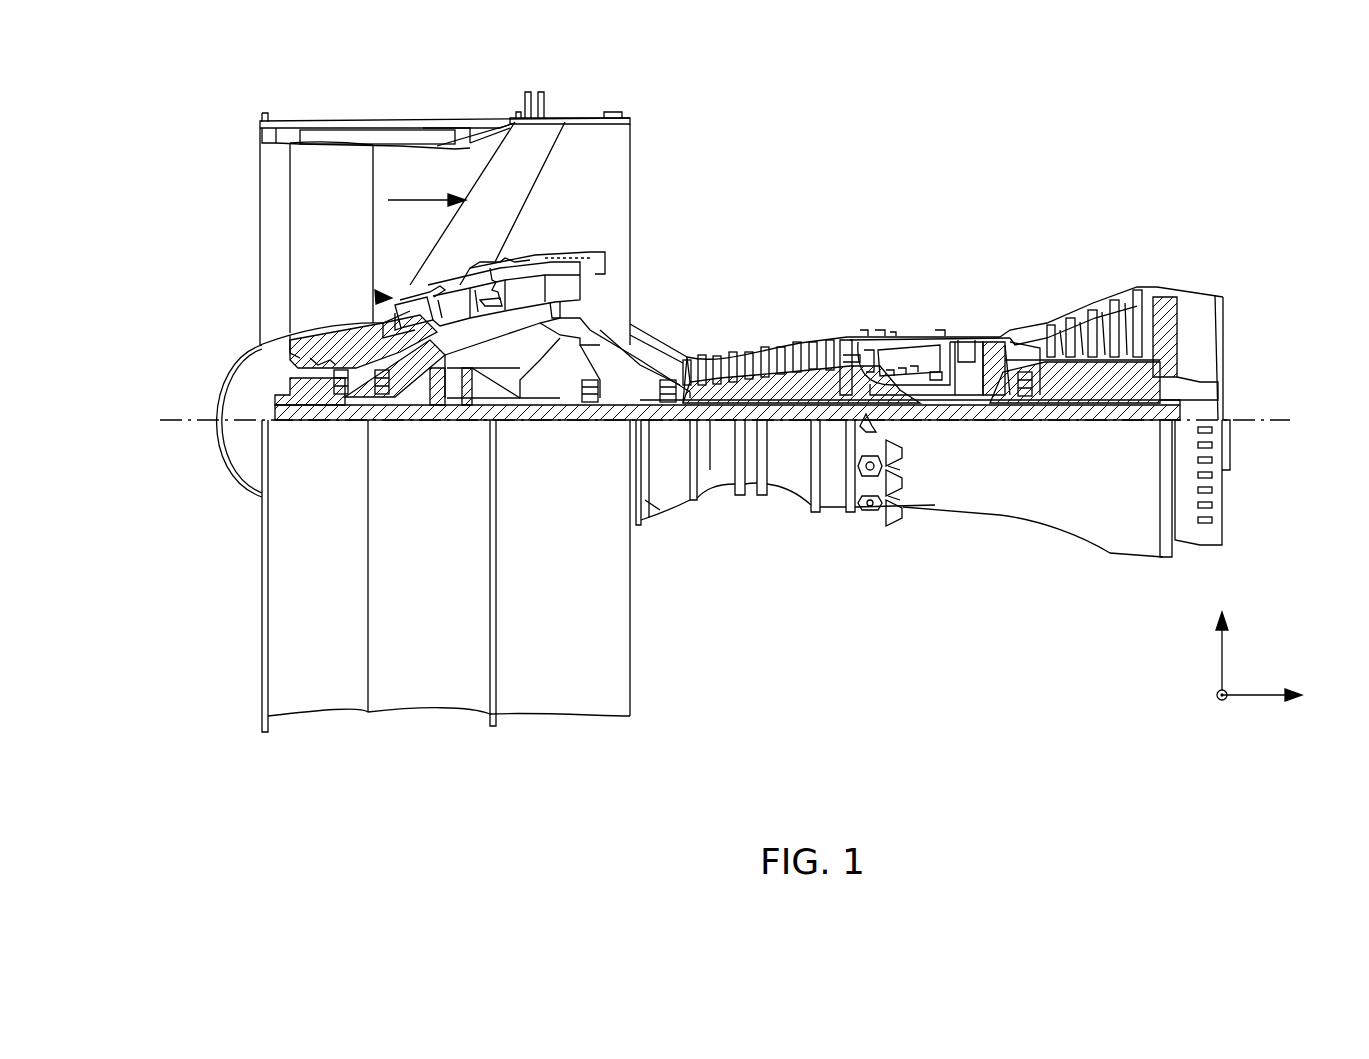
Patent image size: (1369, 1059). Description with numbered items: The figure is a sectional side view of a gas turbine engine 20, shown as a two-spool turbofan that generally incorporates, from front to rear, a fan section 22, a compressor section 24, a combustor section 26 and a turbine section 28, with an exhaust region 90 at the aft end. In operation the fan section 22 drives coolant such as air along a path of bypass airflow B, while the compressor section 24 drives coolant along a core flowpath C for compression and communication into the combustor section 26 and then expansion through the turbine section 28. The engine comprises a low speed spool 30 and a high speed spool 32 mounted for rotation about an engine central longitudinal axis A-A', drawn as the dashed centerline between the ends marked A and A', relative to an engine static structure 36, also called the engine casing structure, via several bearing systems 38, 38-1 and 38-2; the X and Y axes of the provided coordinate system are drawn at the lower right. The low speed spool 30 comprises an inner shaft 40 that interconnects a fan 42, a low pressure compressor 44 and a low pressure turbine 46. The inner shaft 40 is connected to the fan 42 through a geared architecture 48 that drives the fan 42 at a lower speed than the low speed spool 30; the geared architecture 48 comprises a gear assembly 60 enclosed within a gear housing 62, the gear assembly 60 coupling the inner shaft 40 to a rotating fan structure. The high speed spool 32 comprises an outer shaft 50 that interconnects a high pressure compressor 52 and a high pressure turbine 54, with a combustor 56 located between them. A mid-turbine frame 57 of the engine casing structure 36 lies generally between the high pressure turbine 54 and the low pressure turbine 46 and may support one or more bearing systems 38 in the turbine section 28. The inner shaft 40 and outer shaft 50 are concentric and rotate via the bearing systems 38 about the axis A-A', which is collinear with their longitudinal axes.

The gas turbine engine 20 is at (954, 152).
The fan section 22 is at (487, 95).
The compressor section 24 is at (497, 225).
The combustor section 26 is at (960, 225).
The turbine section 28 is at (1165, 225).
The low speed spool 30 is at (797, 430).
The high speed spool 32 is at (843, 375).
The engine static structure 36 is at (232, 748).
The bearing system 38 is at (1022, 405).
The bearing system 38-1 is at (342, 408).
The bearing system 38-2 is at (592, 418).
The inner shaft 40 is at (655, 425).
The fan 42 is at (344, 244).
The low pressure compressor 44 is at (565, 318).
The low pressure turbine 46 is at (1100, 308).
The geared architecture 48 is at (450, 450).
The outer shaft 50 is at (900, 408).
The high pressure compressor 52 is at (790, 347).
The high pressure turbine 54 is at (970, 338).
The combustor 56 is at (913, 352).
The mid-turbine frame 57 is at (1014, 330).
The gear assembly 60 is at (472, 390).
The gear housing 62 is at (472, 370).
The exhaust section 90 is at (1165, 593).
The engine central longitudinal axis A is at (177, 384).
The engine central longitudinal axis A' is at (1276, 382).
The bypass airflow B is at (413, 200).
The core flowpath C is at (378, 296).
The x axis X is at (1251, 703).
The y axis Y is at (1220, 634).